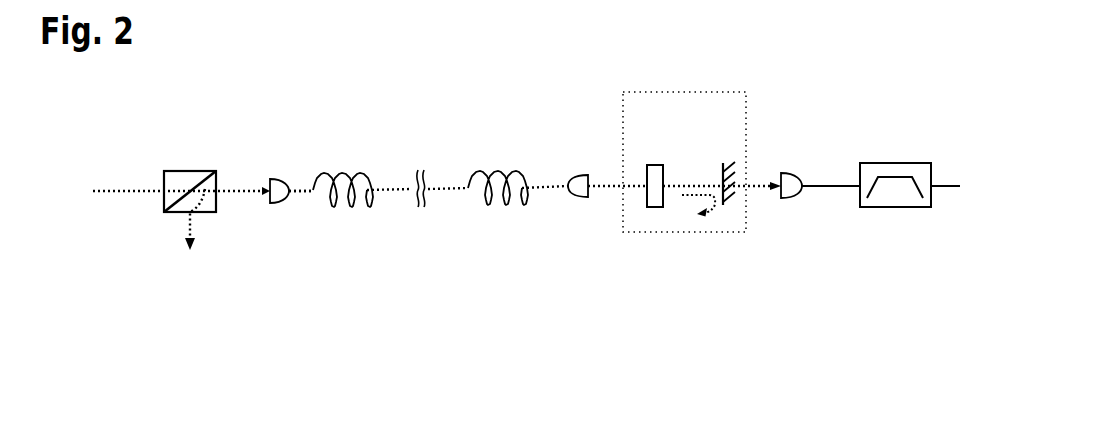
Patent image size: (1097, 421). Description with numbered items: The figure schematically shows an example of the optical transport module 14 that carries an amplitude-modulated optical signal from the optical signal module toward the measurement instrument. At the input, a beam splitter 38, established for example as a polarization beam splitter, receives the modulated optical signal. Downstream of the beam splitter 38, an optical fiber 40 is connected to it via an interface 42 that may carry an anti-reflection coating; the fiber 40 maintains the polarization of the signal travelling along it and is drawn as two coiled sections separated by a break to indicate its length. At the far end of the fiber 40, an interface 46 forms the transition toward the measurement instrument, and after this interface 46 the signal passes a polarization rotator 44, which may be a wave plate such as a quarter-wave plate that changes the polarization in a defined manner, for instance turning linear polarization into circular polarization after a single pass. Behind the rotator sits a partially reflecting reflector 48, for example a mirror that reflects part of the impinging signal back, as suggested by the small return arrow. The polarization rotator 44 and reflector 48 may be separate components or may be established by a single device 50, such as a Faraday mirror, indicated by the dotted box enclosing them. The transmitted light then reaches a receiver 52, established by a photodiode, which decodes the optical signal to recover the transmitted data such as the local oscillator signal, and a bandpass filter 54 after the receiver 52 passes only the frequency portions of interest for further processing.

The optical transport module 14 is at (498, 126).
The beam splitter 38 is at (188, 171).
The optical fiber 40 is at (300, 191).
The interface 42 is at (280, 203).
The polarization rotator 44 is at (655, 165).
The interface 46 is at (580, 175).
The partially reflecting reflector 48 is at (723, 163).
The single device 50 is at (684, 92).
The receiver 52 is at (787, 173).
The filter 54 is at (895, 163).